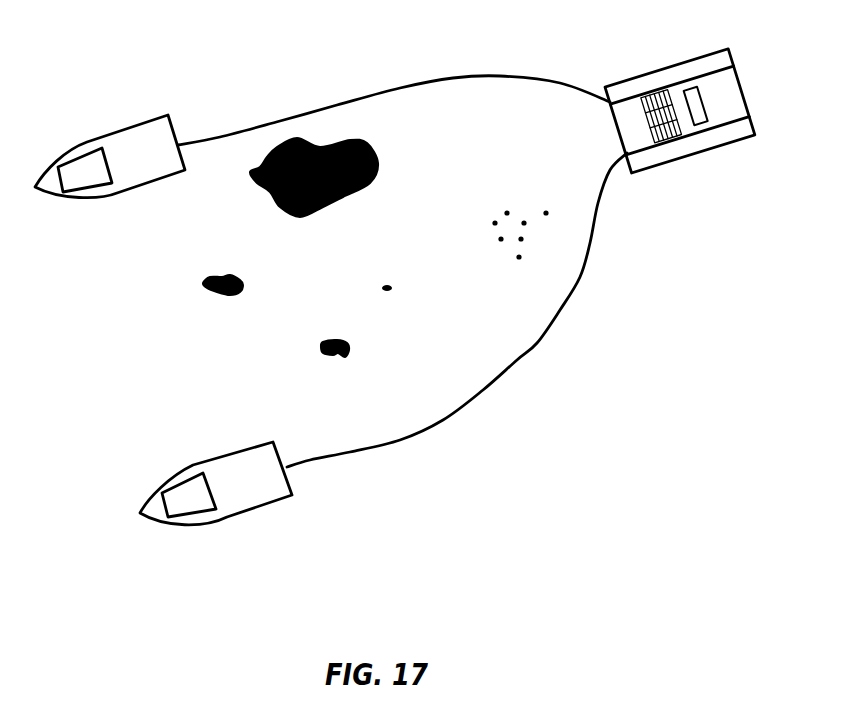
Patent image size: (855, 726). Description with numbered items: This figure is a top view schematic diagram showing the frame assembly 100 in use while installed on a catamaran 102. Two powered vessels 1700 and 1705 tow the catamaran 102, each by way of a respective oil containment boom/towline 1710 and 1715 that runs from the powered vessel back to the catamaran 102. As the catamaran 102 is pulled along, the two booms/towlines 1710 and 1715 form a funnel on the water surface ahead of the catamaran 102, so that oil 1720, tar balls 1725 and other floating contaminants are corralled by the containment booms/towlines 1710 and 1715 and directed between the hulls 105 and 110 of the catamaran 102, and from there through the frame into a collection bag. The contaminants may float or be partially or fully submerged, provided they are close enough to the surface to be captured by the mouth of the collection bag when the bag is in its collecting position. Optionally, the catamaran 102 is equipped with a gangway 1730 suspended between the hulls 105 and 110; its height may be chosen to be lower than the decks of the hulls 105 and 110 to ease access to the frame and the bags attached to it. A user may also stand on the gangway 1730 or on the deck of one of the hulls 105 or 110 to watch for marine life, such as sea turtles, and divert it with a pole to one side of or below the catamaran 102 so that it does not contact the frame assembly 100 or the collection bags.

The frame assembly 100 is at (707, 111).
The catamaran 102 is at (739, 68).
The hull 105 is at (633, 76).
The hull 110 is at (672, 161).
The powered vessel 1700 is at (103, 136).
The powered vessel 1705 is at (237, 515).
The oil containment boom/towline 1710 is at (337, 106).
The oil containment boom/towline 1715 is at (522, 357).
The oil 1720 is at (378, 165).
The tar balls 1725 is at (484, 230).
The gangway 1730 is at (647, 117).